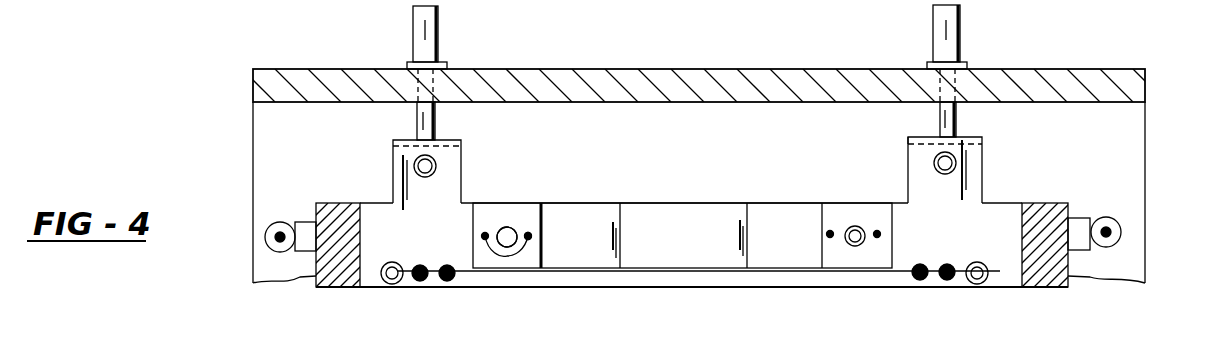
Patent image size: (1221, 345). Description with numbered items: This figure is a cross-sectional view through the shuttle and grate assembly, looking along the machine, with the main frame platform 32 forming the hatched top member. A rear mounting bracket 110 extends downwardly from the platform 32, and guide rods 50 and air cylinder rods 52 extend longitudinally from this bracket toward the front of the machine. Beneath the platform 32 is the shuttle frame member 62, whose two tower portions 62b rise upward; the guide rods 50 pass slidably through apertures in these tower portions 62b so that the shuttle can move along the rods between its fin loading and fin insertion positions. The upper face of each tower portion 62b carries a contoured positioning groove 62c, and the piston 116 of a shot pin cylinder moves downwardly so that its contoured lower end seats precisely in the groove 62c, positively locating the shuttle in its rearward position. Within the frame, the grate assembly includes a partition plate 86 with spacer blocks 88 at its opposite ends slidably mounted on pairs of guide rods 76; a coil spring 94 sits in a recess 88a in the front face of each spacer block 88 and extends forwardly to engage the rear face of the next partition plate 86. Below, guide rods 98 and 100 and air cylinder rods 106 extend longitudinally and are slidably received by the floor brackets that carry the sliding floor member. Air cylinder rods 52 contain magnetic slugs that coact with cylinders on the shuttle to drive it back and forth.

The platform 32 is at (1146, 71).
The rear mounting bracket 110 is at (1146, 188).
The piston 116 is at (436, 126).
The main frame member 62 is at (1018, 203).
The tower portion 62b is at (908, 172).
The positioning groove 62c is at (912, 137).
The guide rod 50 is at (962, 170).
The partition plate 86 is at (676, 203).
The spacer block 88 is at (505, 203).
The recess 88a is at (510, 232).
The guide rod 76 is at (531, 239).
The coil spring 94 is at (855, 226).
The air cylinder rod 106 is at (392, 262).
The guide rod 100 is at (420, 265).
The guide rod 98 is at (447, 265).
The air cylinder rod 52 is at (1121, 228).